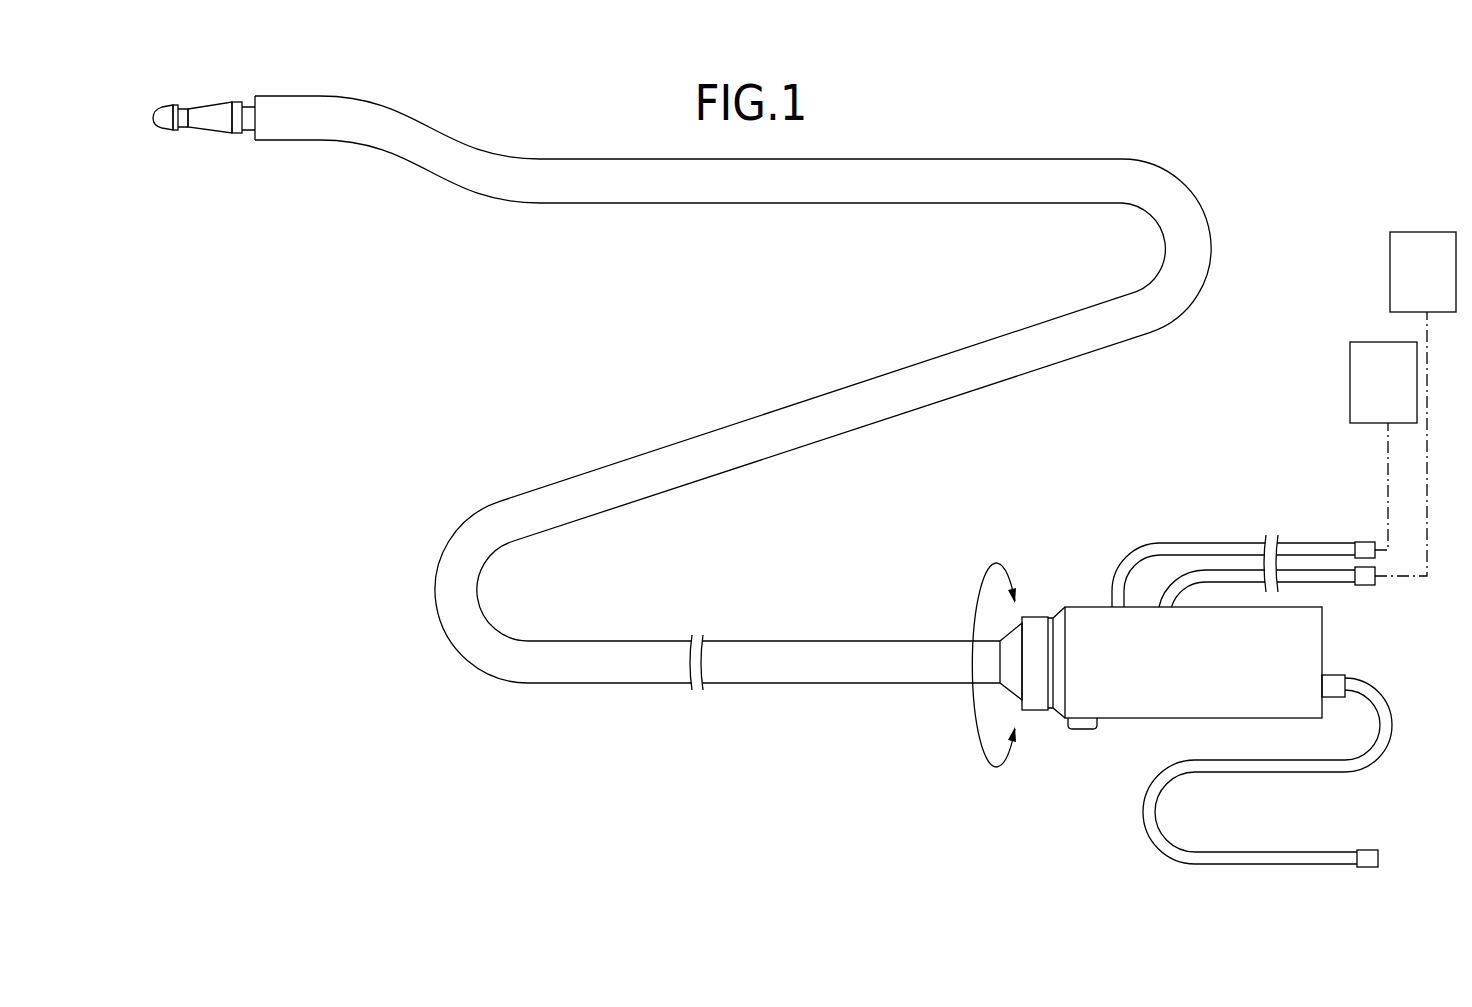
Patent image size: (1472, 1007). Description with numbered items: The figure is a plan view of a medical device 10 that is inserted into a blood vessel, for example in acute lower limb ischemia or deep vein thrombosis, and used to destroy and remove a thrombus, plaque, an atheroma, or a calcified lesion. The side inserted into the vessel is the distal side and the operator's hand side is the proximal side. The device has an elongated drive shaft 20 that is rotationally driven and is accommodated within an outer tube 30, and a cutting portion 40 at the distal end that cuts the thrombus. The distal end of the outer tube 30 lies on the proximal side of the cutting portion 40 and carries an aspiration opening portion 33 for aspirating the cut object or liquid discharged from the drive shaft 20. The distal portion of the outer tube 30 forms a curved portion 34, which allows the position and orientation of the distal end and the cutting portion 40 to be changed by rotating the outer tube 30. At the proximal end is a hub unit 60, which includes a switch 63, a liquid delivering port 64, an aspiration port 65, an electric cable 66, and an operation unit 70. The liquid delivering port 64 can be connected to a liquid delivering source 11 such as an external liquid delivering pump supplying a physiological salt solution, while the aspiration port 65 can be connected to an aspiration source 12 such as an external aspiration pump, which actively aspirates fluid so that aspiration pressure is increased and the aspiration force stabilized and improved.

The medical device 10 is at (143, 80).
The liquid delivering source 11 is at (1420, 260).
The aspiration source 12 is at (1375, 355).
The drive shaft 20 is at (878, 652).
The outer tube 30 is at (752, 684).
The aspiration opening portion 33 is at (250, 141).
The curved portion 34 is at (483, 184).
The cutting portion 40 is at (198, 104).
The hub unit 60 is at (1065, 547).
The switch 63 is at (1082, 731).
The liquid delivering port 64 is at (1205, 579).
The aspiration port 65 is at (1143, 562).
The electric cable 66 is at (1268, 856).
The operation unit 70 is at (1032, 612).